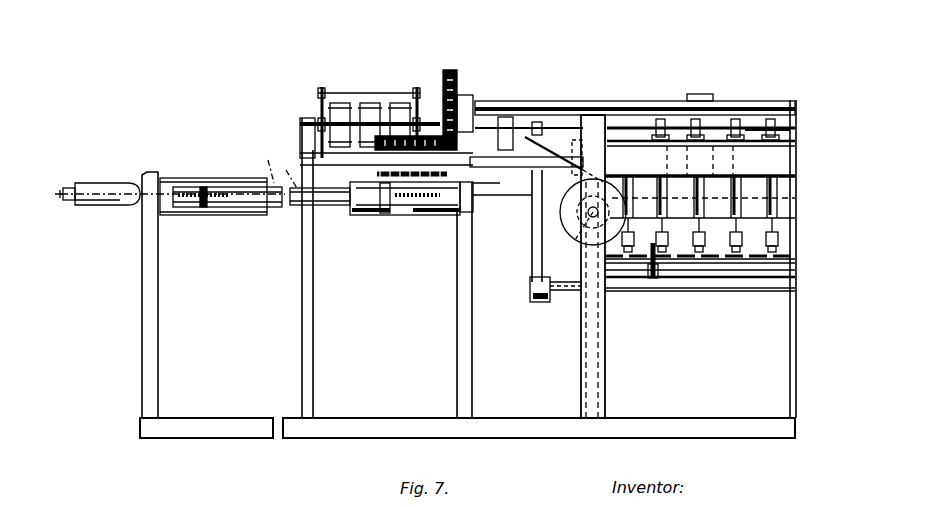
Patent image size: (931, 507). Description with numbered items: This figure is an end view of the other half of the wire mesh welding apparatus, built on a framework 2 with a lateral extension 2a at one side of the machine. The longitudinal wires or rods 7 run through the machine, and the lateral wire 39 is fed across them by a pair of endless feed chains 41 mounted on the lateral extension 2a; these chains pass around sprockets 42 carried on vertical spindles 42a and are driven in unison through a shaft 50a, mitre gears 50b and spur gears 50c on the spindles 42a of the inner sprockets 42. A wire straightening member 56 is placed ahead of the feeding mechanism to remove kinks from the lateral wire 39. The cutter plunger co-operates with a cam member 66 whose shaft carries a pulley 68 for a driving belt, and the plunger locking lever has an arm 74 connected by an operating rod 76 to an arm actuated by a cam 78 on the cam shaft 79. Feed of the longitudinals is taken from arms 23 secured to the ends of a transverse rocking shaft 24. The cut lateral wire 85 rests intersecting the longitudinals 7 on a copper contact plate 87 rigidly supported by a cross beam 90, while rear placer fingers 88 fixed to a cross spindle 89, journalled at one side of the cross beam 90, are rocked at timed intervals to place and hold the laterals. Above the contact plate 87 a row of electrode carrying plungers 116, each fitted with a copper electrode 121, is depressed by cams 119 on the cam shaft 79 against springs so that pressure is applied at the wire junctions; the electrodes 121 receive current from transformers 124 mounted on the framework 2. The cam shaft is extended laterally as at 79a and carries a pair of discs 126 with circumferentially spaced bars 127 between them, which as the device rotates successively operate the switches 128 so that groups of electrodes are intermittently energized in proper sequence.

The framework 2 is at (580, 356).
The lateral extension 2a is at (432, 357).
The longitudinal wires or rods 7 is at (677, 278).
The arm 23 is at (532, 260).
The transverse rocking shaft 24 is at (558, 300).
The lateral wire 39 is at (62, 186).
The endless feed chains 41 is at (299, 175).
The sprockets 42 is at (194, 224).
The vertical spindles 42a is at (405, 215).
The shaft 50a is at (600, 101).
The mitre gears 50b is at (458, 58).
The spur gears 50c is at (375, 215).
The wire straightening member 56 is at (116, 180).
The cam member 66 is at (578, 244).
The pulley 68 is at (560, 212).
The arm 74 is at (654, 180).
The operating rod 76 is at (561, 124).
The cam 78 is at (516, 116).
The cam shaft 79 is at (792, 130).
The cam shaft extension 79a is at (428, 104).
The cut lateral wire 85 is at (794, 258).
The contact plate 87 is at (794, 276).
The placer fingers 88 is at (653, 278).
The cross spindle 89 is at (714, 280).
The cross beam 90 is at (751, 290).
The electrode carrying plungers 116 is at (749, 120).
The cams 119 is at (647, 108).
The electrode 121 is at (722, 235).
The transformers 124 is at (702, 94).
The discs 126 is at (322, 92).
The bars 127 is at (316, 110).
The switches 128 is at (398, 102).